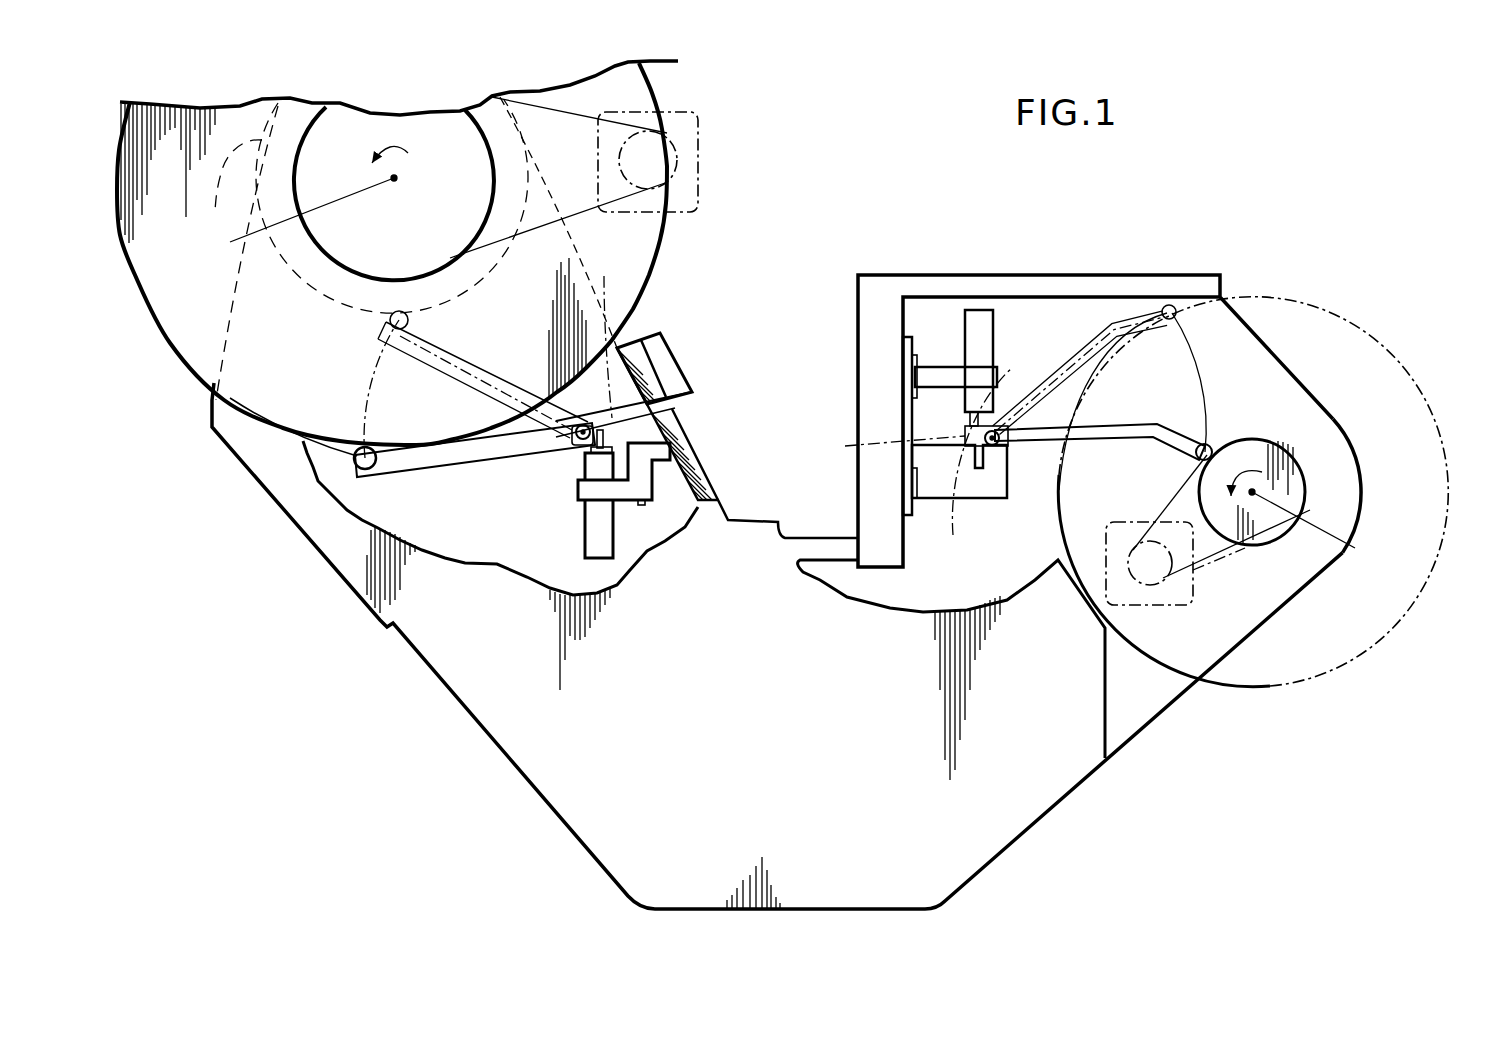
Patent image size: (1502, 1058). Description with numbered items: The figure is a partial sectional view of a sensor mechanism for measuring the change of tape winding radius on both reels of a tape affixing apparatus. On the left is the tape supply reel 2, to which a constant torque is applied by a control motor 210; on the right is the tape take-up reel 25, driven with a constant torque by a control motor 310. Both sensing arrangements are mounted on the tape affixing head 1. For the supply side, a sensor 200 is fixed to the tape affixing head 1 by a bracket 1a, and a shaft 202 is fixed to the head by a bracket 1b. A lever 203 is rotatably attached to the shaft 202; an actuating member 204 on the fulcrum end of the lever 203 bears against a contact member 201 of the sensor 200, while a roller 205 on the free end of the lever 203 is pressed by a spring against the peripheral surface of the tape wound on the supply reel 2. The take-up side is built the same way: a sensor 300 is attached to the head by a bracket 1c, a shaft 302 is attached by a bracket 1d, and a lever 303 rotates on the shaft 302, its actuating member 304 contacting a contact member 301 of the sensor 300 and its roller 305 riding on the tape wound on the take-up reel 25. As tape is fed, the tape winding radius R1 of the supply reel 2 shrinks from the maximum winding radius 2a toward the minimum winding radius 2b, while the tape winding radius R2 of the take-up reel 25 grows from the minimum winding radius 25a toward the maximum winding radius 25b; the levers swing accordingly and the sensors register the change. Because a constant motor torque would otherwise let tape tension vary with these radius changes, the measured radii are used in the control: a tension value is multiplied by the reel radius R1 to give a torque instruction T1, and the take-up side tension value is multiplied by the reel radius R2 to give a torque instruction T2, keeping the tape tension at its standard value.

The tape affixing head 1 is at (704, 457).
The bracket 1a is at (627, 493).
The bracket 1b is at (658, 358).
The bracket 1c is at (935, 375).
The bracket 1d is at (930, 497).
The tape supply reel 2 is at (157, 345).
The maximum winding radius 2a is at (188, 368).
The minimum winding radius 2b is at (236, 253).
The tape take-up reel 25 is at (1282, 300).
The minimum winding radius 25a is at (1302, 463).
The maximum winding radius 25b is at (1354, 330).
The sensor 200 is at (587, 523).
The contact member 201 is at (682, 420).
The shaft 202 is at (578, 440).
The lever 203 is at (516, 388).
The actuating member 204 is at (614, 263).
The roller 205 is at (412, 319).
The control motor 210 is at (706, 148).
The sensor 300 is at (962, 426).
The contact member 301 is at (1003, 420).
The shaft 302 is at (988, 500).
The lever 303 is at (1036, 400).
The actuating member 304 is at (897, 467).
The roller 305 is at (1178, 306).
The control motor 310 is at (1197, 586).
The tape winding radius R1 is at (142, 278).
The tape winding radius R2 is at (1417, 585).
The torque instruction T1 is at (394, 193).
The torque instruction T2 is at (1252, 492).